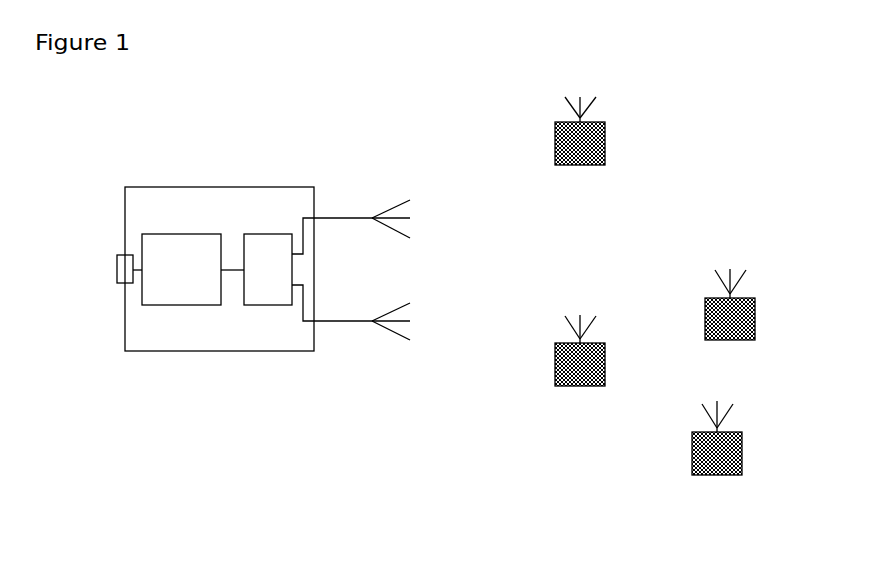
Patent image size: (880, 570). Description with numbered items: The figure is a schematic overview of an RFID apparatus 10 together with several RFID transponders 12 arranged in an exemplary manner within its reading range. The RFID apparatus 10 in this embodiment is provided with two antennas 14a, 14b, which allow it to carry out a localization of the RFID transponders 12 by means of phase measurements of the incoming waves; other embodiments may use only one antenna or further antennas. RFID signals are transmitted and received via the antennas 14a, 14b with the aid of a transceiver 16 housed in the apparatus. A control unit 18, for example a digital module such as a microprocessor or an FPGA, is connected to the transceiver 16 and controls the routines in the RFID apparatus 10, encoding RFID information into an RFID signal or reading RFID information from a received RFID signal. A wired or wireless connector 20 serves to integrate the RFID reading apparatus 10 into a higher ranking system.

The RFID apparatus 10 is at (219, 233).
The RFID transponders 12 is at (677, 316).
The antenna 14a is at (362, 198).
The antenna 14b is at (362, 335).
The transceiver 16 is at (279, 312).
The control unit 18 is at (188, 320).
The connector 20 is at (92, 280).